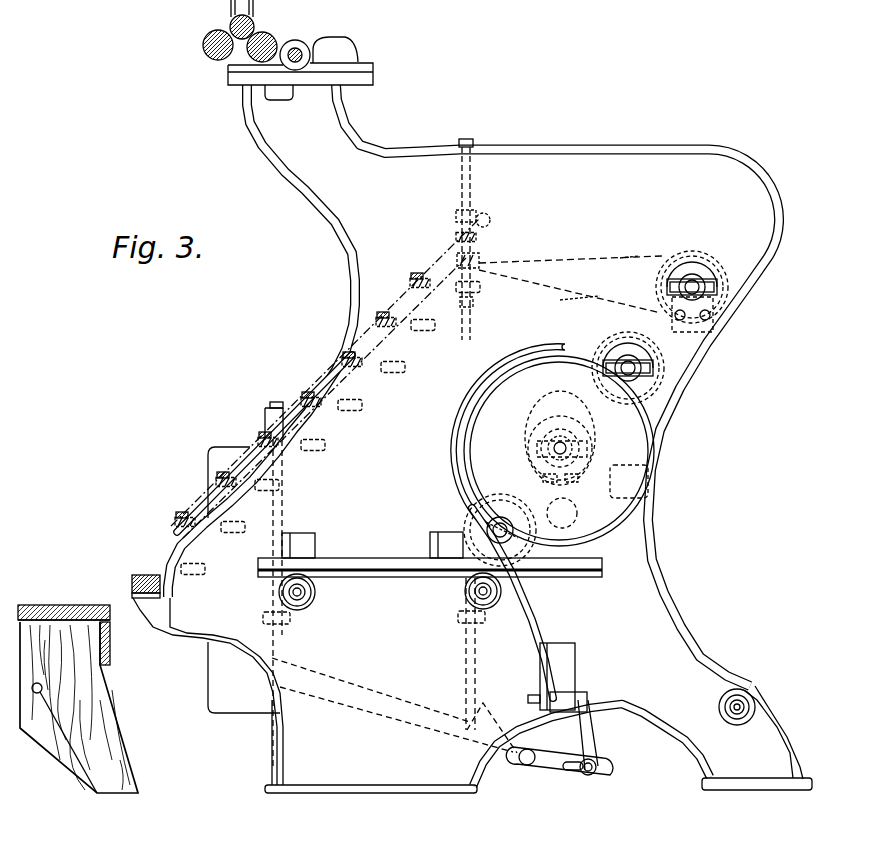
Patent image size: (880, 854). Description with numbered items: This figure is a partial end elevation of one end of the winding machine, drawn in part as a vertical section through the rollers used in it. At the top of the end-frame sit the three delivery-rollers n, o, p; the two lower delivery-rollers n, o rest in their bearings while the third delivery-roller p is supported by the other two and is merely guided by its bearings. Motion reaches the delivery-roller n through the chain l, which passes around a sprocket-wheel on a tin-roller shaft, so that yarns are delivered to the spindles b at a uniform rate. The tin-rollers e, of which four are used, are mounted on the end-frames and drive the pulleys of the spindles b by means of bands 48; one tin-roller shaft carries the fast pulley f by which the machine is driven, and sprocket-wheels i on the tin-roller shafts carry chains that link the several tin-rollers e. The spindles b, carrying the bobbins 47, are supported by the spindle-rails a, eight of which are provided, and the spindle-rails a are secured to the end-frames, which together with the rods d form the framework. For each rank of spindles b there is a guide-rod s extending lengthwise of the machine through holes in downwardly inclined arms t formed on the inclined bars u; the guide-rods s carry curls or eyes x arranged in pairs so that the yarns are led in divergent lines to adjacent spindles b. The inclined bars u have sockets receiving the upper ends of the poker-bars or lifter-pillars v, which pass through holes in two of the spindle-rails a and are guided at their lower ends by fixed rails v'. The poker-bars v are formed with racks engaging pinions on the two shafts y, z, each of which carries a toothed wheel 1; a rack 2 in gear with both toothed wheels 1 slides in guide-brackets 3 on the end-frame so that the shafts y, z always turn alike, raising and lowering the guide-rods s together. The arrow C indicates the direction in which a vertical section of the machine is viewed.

The delivery-roller p is at (228, 26).
The delivery-roller o is at (205, 58).
The delivery-roller n is at (276, 36).
The bobbin 47 is at (458, 144).
The inclined bar u is at (312, 392).
The downwardly inclined arm t is at (392, 318).
The guide-rod s is at (480, 240).
The spindle-rail a is at (480, 288).
The curl or eye x is at (410, 280).
The spindle b is at (480, 262).
The band 48 is at (618, 260).
The arrow C is at (570, 284).
The fast pulley f is at (552, 445).
The chain l is at (662, 270).
The sprocket-wheel i is at (716, 278).
The tin-roller e is at (540, 448).
The rack 2 is at (376, 560).
The guide-bracket 3 is at (372, 545).
The toothed wheel 1 is at (312, 597).
The shaft y is at (303, 596).
The shaft z is at (462, 594).
The poker-bar or lifter-pillar v is at (377, 603).
The fixed rail v' is at (360, 625).
The rod d is at (720, 702).